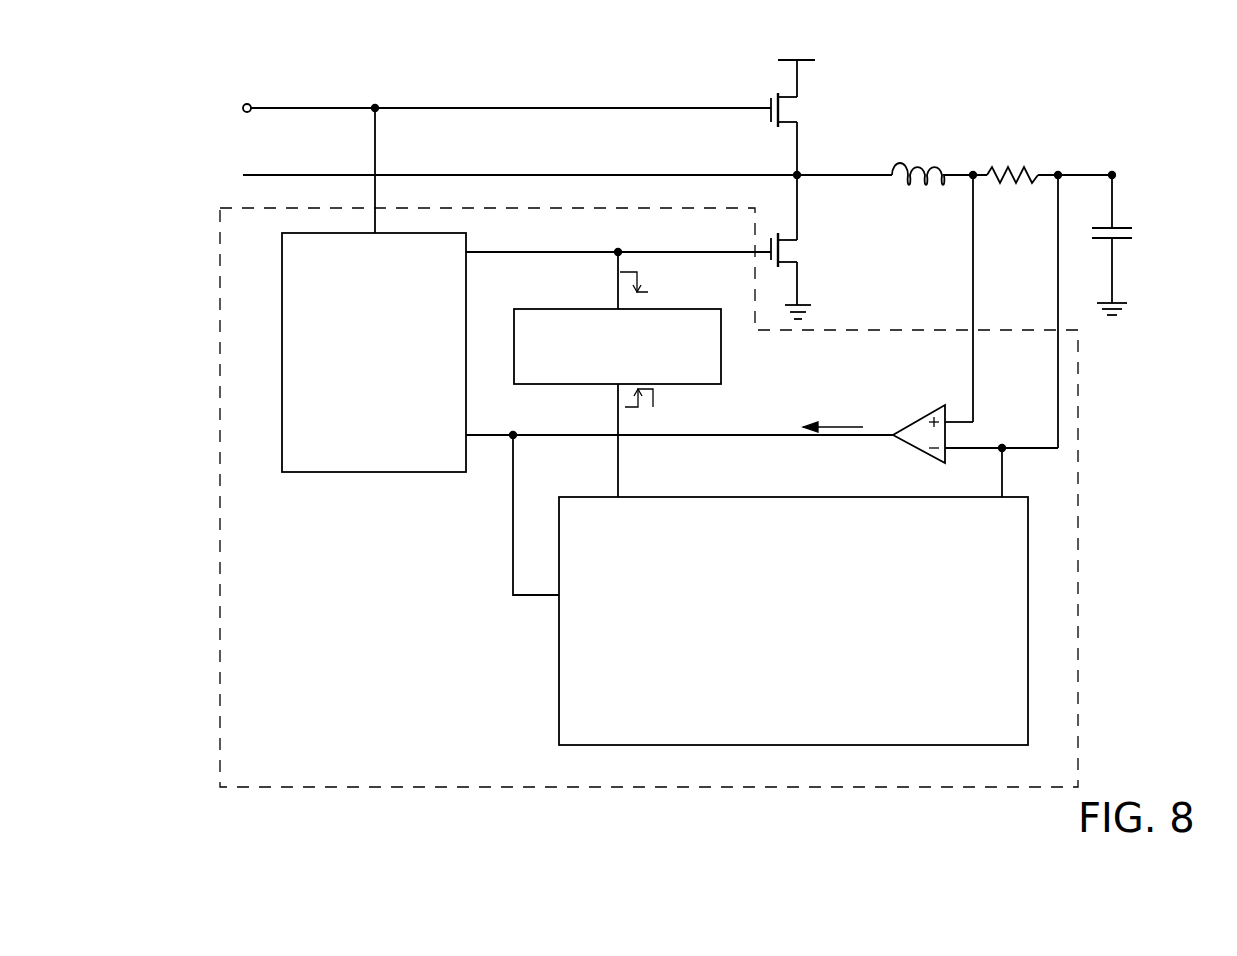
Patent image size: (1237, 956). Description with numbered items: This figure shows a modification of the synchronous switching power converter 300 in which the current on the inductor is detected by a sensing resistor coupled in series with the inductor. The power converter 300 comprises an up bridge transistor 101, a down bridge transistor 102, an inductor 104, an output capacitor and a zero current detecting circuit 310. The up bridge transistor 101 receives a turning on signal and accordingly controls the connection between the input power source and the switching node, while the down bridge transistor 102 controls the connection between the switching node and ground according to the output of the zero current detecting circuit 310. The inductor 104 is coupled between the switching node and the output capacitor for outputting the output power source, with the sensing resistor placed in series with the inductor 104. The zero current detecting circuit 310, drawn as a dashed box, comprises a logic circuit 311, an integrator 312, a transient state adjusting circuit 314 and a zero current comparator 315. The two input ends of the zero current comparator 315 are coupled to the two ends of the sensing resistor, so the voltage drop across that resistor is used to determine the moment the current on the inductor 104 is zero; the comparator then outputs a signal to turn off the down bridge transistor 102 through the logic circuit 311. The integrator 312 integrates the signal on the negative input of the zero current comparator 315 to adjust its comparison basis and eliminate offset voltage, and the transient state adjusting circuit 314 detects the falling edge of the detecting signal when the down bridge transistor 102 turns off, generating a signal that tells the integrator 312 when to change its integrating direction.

The synchronous switching power converter 300 is at (1126, 90).
The up bridge transistor 101 is at (800, 112).
The down bridge transistor 102 is at (800, 255).
The inductor 104 is at (915, 160).
The zero current detecting circuit 310 is at (1078, 547).
The logic circuit 311 is at (466, 287).
The integrator 312 is at (559, 677).
The transient state adjusting circuit 314 is at (721, 357).
The zero current comparator 315 is at (921, 421).